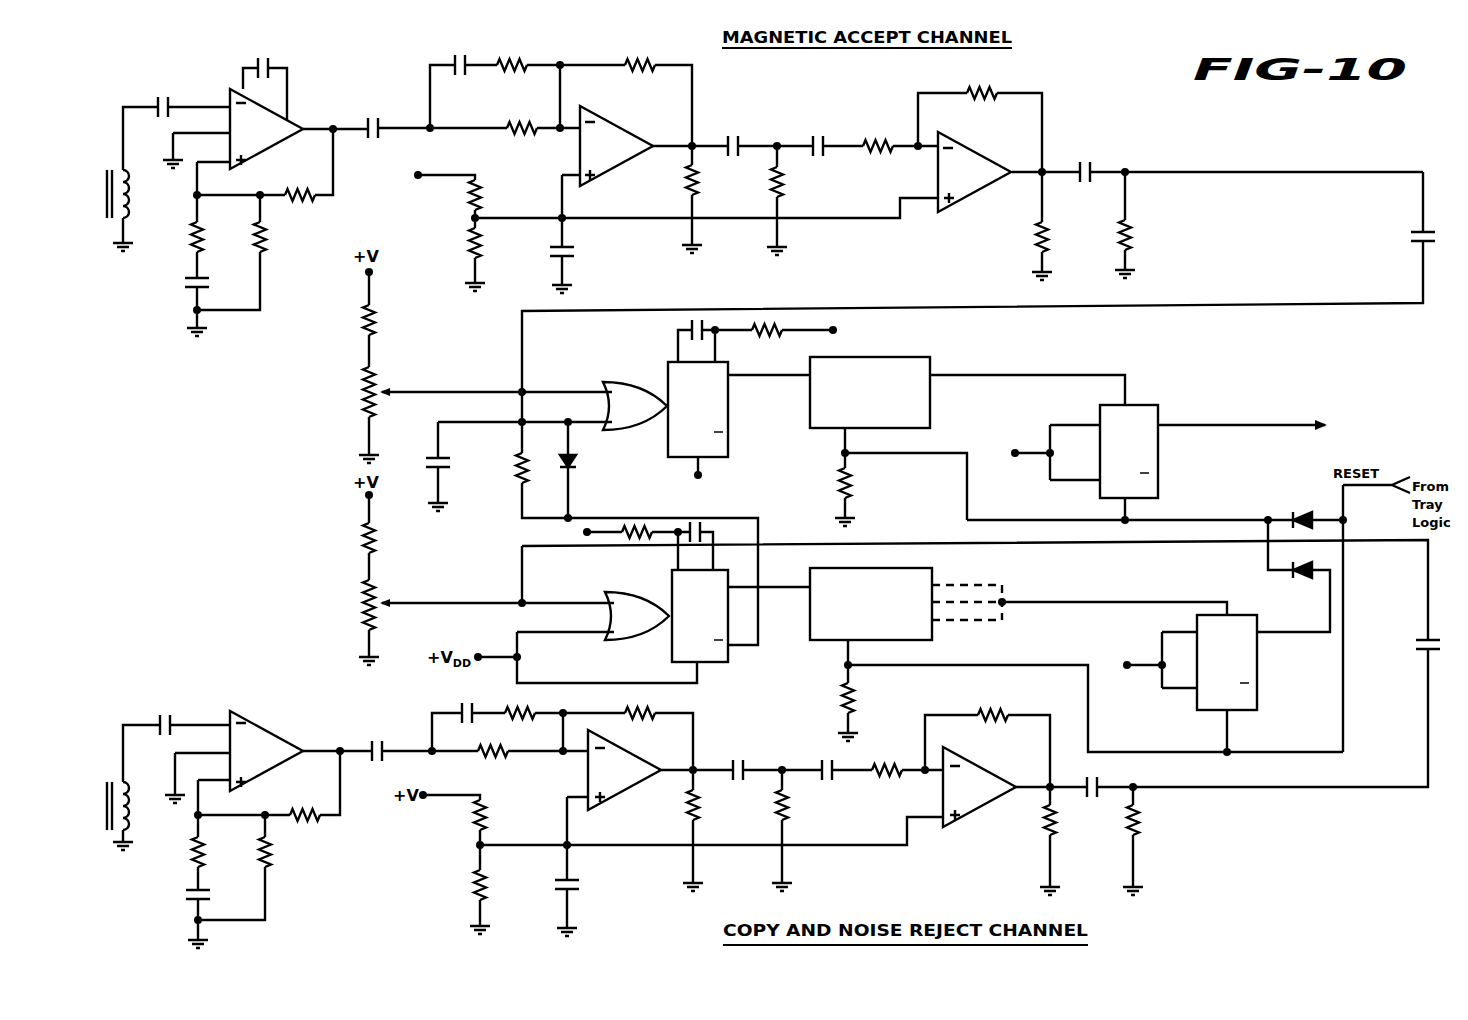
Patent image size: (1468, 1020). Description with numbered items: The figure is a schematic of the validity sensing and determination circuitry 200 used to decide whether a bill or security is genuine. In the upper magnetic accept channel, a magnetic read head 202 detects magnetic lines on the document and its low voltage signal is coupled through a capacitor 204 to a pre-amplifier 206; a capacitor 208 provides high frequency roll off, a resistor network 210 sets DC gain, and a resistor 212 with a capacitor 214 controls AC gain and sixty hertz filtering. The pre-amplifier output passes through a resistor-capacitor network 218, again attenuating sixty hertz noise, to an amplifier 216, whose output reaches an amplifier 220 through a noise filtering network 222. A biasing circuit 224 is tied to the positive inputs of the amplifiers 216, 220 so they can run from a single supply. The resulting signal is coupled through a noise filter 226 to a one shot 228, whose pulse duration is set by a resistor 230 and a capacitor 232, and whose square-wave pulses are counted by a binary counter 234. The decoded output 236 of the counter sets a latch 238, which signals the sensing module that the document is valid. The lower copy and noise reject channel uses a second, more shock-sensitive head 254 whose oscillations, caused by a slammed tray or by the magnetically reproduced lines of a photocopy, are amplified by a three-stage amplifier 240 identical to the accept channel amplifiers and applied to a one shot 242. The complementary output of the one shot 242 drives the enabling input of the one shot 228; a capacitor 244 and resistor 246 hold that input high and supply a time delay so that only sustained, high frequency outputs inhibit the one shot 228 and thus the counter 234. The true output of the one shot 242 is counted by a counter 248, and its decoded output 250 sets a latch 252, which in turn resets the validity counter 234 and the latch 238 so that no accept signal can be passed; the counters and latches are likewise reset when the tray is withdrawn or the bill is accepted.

The validity sensing and determination circuitry 200 is at (1258, 134).
The magnetic read head 202 is at (104, 239).
The capacitor 204 is at (167, 88).
The pre-amplifier 206 is at (265, 129).
The capacitor 208 is at (268, 59).
The resistor network 210 is at (275, 228).
The resistor 212 is at (193, 231).
The capacitor 214 is at (193, 291).
The amplifier 216 is at (639, 199).
The resistor-capacitor network 218 is at (386, 77).
The amplifier 220 is at (997, 183).
The noise filtering network 222 is at (755, 125).
The biasing circuit 224 is at (455, 221).
The noise filter 226 is at (1108, 149).
The one shot 228 is at (657, 377).
The resistor 230 is at (765, 317).
The capacitor 232 is at (688, 311).
The binary counter 234 is at (886, 386).
The output 236 is at (947, 370).
The latch 238 is at (1155, 405).
The three-stage amplifier 240 is at (1186, 837).
The one shot 242 is at (659, 592).
The capacitor 244 is at (443, 457).
The resistor 246 is at (515, 480).
The counter 248 is at (891, 597).
The decoded output 250 is at (1009, 597).
The latch 252 is at (1230, 615).
The head 254 is at (104, 847).